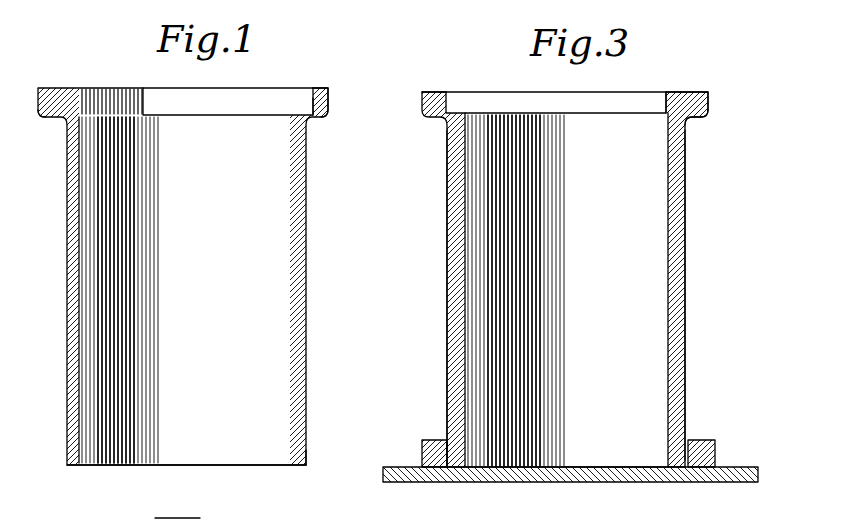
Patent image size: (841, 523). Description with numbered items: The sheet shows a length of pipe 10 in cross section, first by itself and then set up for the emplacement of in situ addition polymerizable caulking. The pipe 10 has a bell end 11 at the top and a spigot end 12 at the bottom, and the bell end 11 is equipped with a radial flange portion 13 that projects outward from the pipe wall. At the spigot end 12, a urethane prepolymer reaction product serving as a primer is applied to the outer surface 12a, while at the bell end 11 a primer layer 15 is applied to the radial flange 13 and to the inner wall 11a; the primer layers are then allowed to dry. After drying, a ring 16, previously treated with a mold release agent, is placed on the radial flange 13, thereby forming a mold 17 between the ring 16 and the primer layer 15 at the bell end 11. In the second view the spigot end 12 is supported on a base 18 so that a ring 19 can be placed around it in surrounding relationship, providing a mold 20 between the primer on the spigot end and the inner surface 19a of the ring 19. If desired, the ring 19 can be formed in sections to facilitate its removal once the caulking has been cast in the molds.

In FIG. 1, the pipe 10 is at (307, 265).
In FIG. 3, the pipe 10 is at (687, 270).
In FIG. 1, the bell end 11 is at (322, 88).
In FIG. 3, the bell end 11 is at (706, 92).
In FIG. 1, the inner wall 11a is at (313, 100).
In FIG. 1, the spigot end 12 is at (73, 466).
In FIG. 3, the spigot end 12 is at (457, 482).
In FIG. 1, the outer surface 12a is at (307, 455).
In FIG. 1, the radial flange portion 13 is at (90, 88).
In FIG. 3, the radial flange portion 13 is at (703, 112).
In FIG. 3, the primer layer 15 is at (437, 92).
In FIG. 3, the ring 16 is at (665, 92).
In FIG. 3, the mold 17 is at (441, 92).
In FIG. 3, the base 18 is at (759, 478).
In FIG. 3, the ring 19 is at (715, 447).
In FIG. 3, the inner surface 19a is at (440, 440).
In FIG. 3, the mold 20 is at (447, 440).